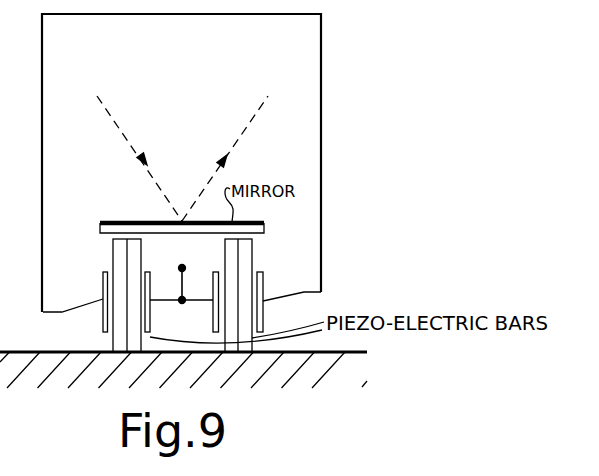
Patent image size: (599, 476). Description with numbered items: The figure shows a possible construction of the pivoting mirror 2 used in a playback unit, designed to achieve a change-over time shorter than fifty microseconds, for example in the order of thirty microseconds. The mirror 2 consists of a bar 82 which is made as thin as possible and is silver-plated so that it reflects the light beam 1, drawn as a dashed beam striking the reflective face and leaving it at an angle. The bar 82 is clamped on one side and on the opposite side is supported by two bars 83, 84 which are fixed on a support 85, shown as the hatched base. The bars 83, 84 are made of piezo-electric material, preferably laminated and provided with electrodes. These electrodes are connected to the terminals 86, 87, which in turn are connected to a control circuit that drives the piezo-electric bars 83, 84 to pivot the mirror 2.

The light beam 1 is at (240, 139).
The mirror 2 is at (296, 229).
The bar 82 is at (103, 233).
The bar 83 is at (248, 252).
The bar 84 is at (137, 254).
The support 85 is at (70, 367).
The terminal 86 is at (186, 268).
The terminal 87 is at (183, 14).